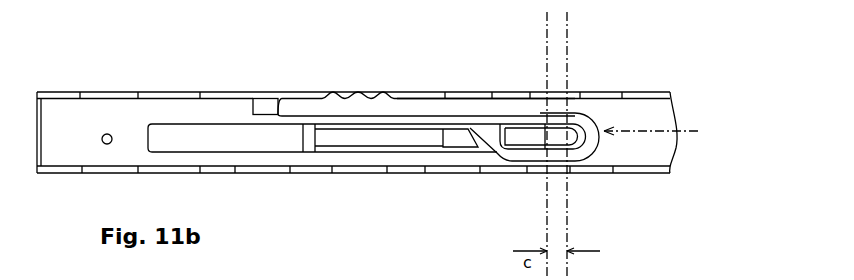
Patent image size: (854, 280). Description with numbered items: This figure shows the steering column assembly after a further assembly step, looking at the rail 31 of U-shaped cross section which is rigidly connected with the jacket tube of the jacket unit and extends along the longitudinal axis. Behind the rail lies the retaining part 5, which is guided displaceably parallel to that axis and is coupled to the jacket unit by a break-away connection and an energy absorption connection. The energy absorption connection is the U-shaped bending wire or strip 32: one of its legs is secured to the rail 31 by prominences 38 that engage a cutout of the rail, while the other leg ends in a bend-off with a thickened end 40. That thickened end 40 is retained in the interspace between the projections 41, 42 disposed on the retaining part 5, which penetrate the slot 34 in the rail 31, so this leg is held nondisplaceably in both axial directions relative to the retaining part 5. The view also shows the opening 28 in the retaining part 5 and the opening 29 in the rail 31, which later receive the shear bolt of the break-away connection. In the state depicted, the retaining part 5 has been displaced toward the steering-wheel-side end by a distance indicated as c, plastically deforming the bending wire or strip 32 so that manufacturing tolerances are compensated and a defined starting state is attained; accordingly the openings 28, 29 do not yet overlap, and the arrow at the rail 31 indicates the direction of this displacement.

The retaining part 5 is at (375, 136).
The opening 28 is at (86, 140).
The opening 29 is at (118, 132).
The rail 31 is at (627, 104).
The bending wire or strip 32 is at (671, 131).
The slot 34 is at (283, 130).
The prominences 38 is at (382, 90).
The thickened end 40 is at (490, 130).
The projection 41 is at (458, 144).
The projection 42 is at (520, 154).